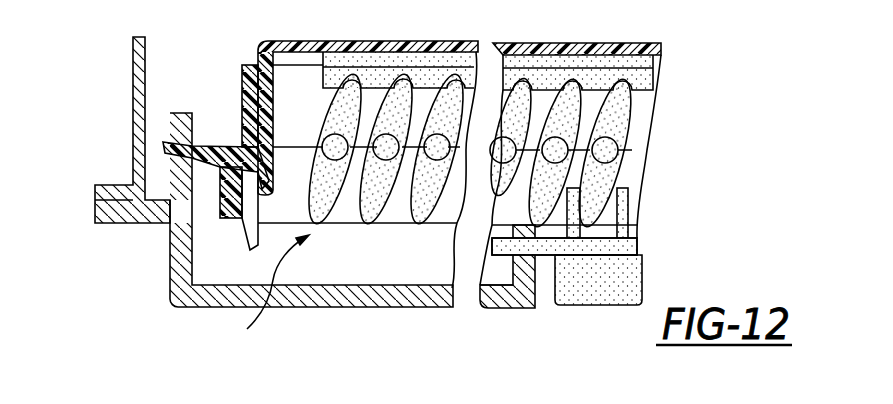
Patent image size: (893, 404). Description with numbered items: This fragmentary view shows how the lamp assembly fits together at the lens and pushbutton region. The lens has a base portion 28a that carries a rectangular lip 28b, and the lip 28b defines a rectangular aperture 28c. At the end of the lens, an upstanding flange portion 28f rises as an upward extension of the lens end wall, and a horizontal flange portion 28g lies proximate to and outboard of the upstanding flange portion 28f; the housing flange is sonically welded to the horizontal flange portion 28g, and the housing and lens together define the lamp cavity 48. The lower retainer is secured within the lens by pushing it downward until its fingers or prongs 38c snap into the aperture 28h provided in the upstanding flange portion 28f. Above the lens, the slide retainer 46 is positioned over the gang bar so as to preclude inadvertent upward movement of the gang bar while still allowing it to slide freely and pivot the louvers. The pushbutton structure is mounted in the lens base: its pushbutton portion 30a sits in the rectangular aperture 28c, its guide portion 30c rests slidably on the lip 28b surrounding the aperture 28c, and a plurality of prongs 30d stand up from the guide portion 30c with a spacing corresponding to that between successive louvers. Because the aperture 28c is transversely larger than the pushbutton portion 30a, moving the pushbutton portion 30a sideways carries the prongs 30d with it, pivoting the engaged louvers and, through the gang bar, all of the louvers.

The base portion 28a is at (393, 309).
The rectangular lip 28b is at (512, 286).
The rectangular aperture 28c is at (535, 294).
The upstanding flange portion 28f is at (182, 112).
The horizontal flange portion 28g is at (127, 224).
The aperture 28h is at (166, 147).
The pushbutton portion 30a is at (622, 306).
The guide portion 30c is at (633, 249).
The prongs 30d is at (624, 212).
The fingers or prongs 38c is at (205, 145).
The slide retainer 46 is at (562, 43).
The lamp cavity 48 is at (258, 295).